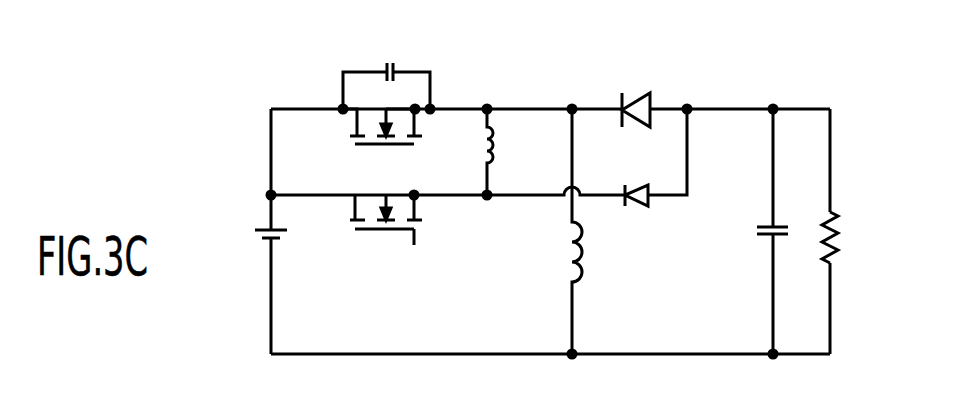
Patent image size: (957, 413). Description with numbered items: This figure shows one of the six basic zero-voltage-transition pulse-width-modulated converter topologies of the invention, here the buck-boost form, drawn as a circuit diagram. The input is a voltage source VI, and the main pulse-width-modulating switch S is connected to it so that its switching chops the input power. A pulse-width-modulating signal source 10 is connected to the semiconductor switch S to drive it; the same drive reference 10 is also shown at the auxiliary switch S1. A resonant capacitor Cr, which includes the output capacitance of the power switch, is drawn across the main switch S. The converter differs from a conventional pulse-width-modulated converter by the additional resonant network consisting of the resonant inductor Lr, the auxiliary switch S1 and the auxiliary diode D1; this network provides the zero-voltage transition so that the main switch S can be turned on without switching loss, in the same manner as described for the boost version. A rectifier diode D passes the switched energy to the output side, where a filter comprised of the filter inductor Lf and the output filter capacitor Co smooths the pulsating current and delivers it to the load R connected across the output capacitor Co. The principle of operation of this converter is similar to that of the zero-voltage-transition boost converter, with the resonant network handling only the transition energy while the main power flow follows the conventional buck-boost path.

The pulse-width-modulating signal source 10 is at (414, 144).
The voltage source VI is at (254, 231).
The resonant capacitor Cr is at (386, 76).
The pulse-width-modulating switch S is at (382, 143).
The auxiliary switch S1 is at (386, 228).
The resonant inductor Lr is at (504, 152).
The filter inductor Lf is at (590, 231).
The rectifier diode D is at (636, 97).
The auxiliary diode D1 is at (658, 172).
The filter capacitor Co is at (759, 231).
The load R is at (839, 237).